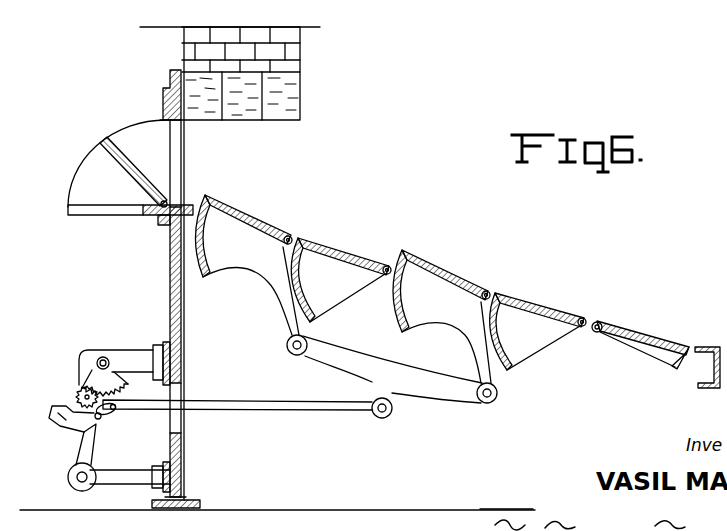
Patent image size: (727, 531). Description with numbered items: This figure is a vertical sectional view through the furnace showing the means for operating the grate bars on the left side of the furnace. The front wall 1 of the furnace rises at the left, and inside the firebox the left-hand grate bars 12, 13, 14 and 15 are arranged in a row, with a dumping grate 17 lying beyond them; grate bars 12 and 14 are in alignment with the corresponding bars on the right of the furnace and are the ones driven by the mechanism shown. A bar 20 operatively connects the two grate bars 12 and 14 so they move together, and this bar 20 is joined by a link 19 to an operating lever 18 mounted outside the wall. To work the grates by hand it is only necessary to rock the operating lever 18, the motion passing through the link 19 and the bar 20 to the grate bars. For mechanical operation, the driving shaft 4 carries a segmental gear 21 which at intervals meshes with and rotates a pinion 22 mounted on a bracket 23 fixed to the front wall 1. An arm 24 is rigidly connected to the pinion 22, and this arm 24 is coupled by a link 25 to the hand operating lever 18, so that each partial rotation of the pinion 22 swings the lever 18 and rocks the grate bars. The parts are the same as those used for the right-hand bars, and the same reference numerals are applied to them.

The front wall of the furnace 1 is at (170, 272).
The driving shaft 4 is at (103, 357).
The grate bar 12 is at (245, 210).
The grate bar 13 is at (345, 251).
The grate bar 14 is at (455, 272).
The grate bar 15 is at (546, 301).
The dumping grate 17 is at (641, 330).
The operating lever 18 is at (73, 451).
The link 19 is at (247, 409).
The bar 20 is at (440, 398).
The segmental gear 21 is at (127, 384).
The pinion 22 is at (77, 397).
The bracket 23 is at (125, 360).
The arm 24 is at (98, 421).
The link 25 is at (116, 411).